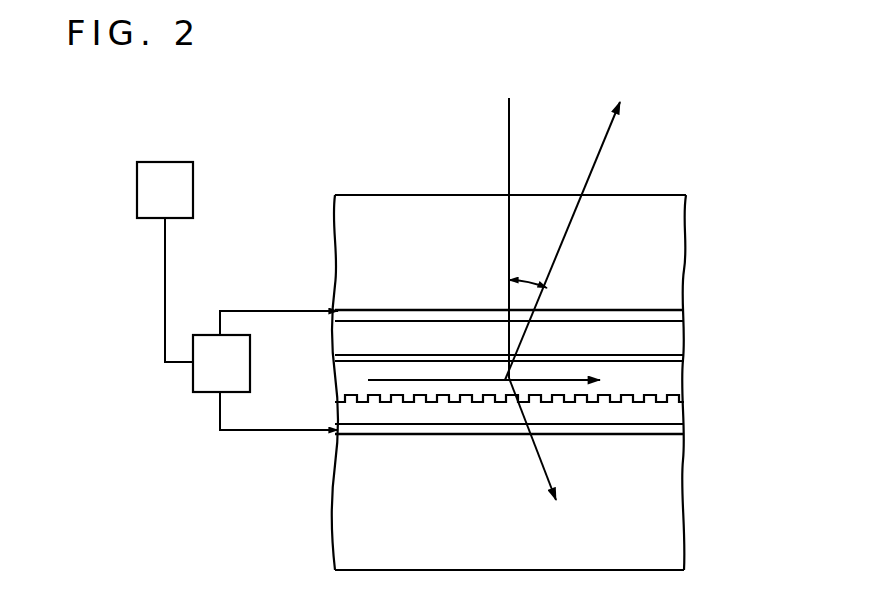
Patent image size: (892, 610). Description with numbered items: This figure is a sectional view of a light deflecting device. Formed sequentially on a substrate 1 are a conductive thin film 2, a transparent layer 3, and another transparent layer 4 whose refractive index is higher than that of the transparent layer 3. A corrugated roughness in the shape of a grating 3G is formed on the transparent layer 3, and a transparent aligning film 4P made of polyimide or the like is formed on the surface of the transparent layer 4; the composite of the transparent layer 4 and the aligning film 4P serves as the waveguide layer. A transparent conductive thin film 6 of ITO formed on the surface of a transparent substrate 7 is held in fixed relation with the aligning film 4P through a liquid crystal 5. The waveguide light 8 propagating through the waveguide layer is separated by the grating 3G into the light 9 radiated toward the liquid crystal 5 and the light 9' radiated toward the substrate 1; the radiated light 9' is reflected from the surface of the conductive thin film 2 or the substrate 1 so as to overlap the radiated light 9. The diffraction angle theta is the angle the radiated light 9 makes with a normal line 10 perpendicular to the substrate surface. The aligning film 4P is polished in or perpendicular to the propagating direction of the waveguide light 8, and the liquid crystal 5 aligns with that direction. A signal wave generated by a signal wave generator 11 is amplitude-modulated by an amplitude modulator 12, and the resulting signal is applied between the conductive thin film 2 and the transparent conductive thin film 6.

The substrate 1 is at (665, 495).
The conductive thin film 2 is at (683, 437).
The transparent layer 3 is at (667, 415).
The grating 3G is at (435, 405).
The transparent layer 4 is at (672, 383).
The transparent aligning film 4P is at (670, 360).
The liquid crystal 5 is at (667, 340).
The transparent conductive thin film 6 is at (663, 315).
The transparent substrate 7 is at (672, 250).
The waveguide light 8 is at (445, 380).
The radiated light 9 is at (587, 241).
The radiated light 9' is at (559, 439).
The normal line 10 is at (509, 108).
The signal wave generator 11 is at (187, 197).
The amplitude modulator 12 is at (240, 367).